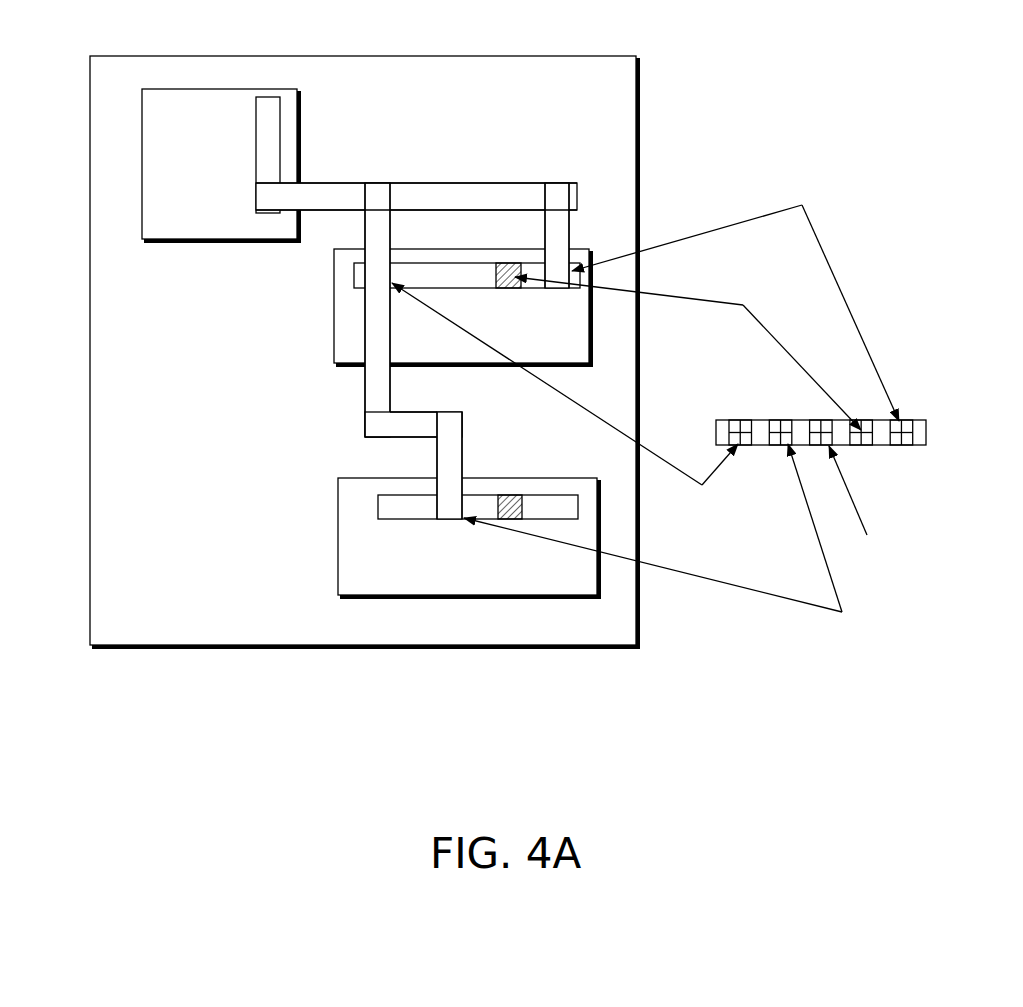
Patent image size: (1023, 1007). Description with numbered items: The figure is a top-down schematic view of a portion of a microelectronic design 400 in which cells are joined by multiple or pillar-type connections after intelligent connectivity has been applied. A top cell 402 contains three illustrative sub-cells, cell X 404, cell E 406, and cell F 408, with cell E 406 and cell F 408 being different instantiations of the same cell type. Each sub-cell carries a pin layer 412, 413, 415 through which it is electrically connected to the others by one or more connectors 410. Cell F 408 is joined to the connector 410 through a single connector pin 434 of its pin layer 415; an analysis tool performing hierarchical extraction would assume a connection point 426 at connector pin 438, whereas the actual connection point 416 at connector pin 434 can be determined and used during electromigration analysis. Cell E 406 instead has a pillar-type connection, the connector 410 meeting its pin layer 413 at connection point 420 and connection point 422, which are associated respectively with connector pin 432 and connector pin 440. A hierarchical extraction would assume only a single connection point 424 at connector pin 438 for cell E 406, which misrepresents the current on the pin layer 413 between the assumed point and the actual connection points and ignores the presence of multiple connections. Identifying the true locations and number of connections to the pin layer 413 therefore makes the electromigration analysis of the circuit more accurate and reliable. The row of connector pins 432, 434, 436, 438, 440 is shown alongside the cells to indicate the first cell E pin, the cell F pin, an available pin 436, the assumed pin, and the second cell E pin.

The microelectronic design 400 is at (712, 84).
The top cell 402 is at (365, 351).
The cell X 404 is at (256, 165).
The cell E 406 is at (463, 293).
The cell F 408 is at (469, 525).
The connectors 410 is at (487, 197).
The pin layer 412 is at (266, 155).
The pin layer 413 is at (427, 270).
The pin layer 415 is at (395, 507).
The actual connection point 416 is at (448, 513).
The connection point 420 is at (368, 276).
The connection point 422 is at (572, 280).
The assumed connection point 424 is at (507, 262).
The assumed connection point 426 is at (512, 495).
The connector pin 432 is at (742, 420).
The connector pin 434 is at (782, 420).
The available connection pin location 436 is at (817, 420).
The connector pin 438 is at (867, 447).
The connector pin 440 is at (850, 424).